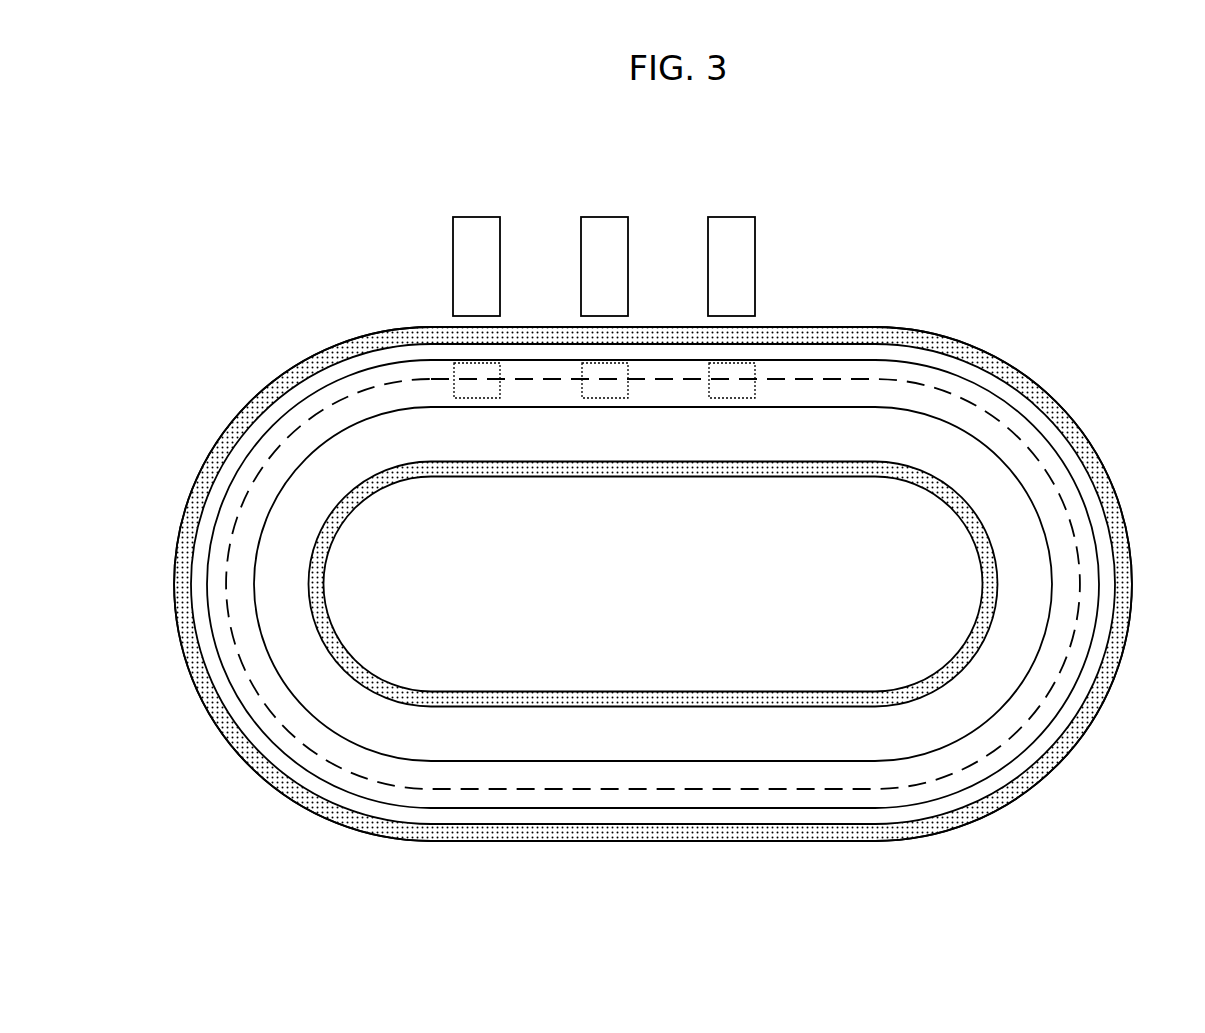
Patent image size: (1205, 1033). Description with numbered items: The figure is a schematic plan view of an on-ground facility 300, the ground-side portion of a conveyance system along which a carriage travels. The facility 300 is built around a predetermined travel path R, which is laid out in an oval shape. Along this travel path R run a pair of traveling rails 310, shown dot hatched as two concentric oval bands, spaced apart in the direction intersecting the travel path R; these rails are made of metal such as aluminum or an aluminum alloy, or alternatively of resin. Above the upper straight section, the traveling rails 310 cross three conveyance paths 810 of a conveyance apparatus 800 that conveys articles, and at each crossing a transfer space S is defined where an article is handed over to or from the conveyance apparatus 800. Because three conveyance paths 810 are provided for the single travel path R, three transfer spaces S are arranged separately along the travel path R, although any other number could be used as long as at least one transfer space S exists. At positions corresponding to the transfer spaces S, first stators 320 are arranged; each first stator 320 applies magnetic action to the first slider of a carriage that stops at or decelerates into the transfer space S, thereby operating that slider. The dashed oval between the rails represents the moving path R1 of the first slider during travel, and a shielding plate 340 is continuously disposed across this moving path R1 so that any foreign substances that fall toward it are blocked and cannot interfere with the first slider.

The on-ground facility 300 is at (241, 262).
The traveling rail 310 is at (345, 347).
The first stator 320 is at (483, 393).
The shielding plate 340 is at (830, 367).
The conveyance apparatus 800 is at (634, 215).
The conveyance path 810 is at (477, 233).
The travel path R is at (265, 371).
The moving path R1 is at (917, 383).
The transfer space S is at (444, 363).